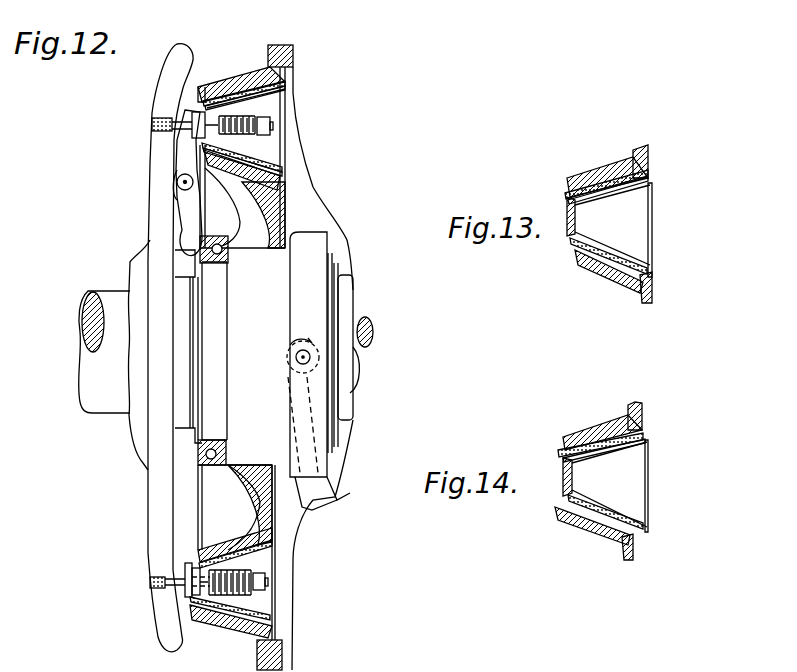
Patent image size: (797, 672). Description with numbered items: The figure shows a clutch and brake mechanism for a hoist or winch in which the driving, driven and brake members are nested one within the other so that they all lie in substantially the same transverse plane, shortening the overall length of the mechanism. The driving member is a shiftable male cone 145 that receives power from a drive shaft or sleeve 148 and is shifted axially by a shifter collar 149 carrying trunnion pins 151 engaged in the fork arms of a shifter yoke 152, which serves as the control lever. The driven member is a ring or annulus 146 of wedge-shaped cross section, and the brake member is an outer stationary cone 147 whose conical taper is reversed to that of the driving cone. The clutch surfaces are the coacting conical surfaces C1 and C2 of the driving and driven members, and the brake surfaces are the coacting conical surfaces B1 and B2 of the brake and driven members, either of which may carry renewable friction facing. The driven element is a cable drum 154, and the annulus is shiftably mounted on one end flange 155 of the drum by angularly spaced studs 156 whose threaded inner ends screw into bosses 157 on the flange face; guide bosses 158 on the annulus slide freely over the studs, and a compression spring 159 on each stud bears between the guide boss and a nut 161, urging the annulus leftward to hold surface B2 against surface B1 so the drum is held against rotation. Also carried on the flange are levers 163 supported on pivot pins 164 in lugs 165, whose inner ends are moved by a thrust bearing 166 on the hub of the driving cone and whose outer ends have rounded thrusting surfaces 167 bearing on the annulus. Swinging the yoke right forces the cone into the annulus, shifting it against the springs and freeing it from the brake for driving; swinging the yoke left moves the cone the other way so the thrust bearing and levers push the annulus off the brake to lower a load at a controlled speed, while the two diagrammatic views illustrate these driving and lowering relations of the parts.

In FIG. 12, the shiftable male cone 145 is at (285, 202).
In FIG. 13, the shiftable male cone 145 is at (617, 271).
In FIG. 14, the shiftable male cone 145 is at (597, 528).
In FIG. 12, the ring or annulus of wedge-shaped cross section 146 is at (258, 104).
In FIG. 13, the ring or annulus of wedge-shaped cross section 146 is at (620, 238).
In FIG. 14, the ring or annulus of wedge-shaped cross section 146 is at (617, 502).
In FIG. 12, the outer stationary cone 147 is at (221, 97).
In FIG. 13, the outer stationary cone 147 is at (590, 176).
In FIG. 14, the outer stationary cone 147 is at (583, 435).
In FIG. 12, the drive shaft or sleeve 148 is at (357, 310).
In FIG. 12, the shifter collar 149 is at (317, 253).
In FIG. 12, the trunnion pins 151 is at (307, 357).
In FIG. 12, the shifter yoke 152 is at (345, 455).
In FIG. 12, the cable drum 154 is at (130, 250).
In FIG. 12, the end wall or flange 155 is at (152, 89).
In FIG. 12, the studs 156 is at (218, 597).
In FIG. 12, the bosses 157 is at (168, 586).
In FIG. 12, the guide bosses 158 is at (180, 594).
In FIG. 12, the compression spring 159 is at (248, 595).
In FIG. 12, the nut 161 is at (265, 570).
In FIG. 12, the levers 163 is at (178, 153).
In FIG. 12, the pivot pins 164 is at (177, 181).
In FIG. 12, the lugs 165 is at (176, 188).
In FIG. 12, the thrust bearing 166 is at (200, 458).
In FIG. 12, the rounded thrusting surfaces 167 is at (154, 116).
In FIG. 12, the inner conical brake surface B1 is at (270, 90).
In FIG. 13, the inner conical brake surface B1 is at (650, 185).
In FIG. 14, the inner conical brake surface B1 is at (648, 445).
In FIG. 12, the outer conical brake surface B2 is at (265, 99).
In FIG. 13, the outer conical brake surface B2 is at (628, 194).
In FIG. 14, the outer conical brake surface B2 is at (625, 452).
In FIG. 12, the conical clutch surface C1 is at (277, 162).
In FIG. 13, the conical clutch surface C1 is at (652, 256).
In FIG. 14, the conical clutch surface C1 is at (647, 523).
In FIG. 12, the conical clutch surface C2 is at (282, 188).
In FIG. 13, the conical clutch surface C2 is at (652, 288).
In FIG. 14, the conical clutch surface C2 is at (635, 542).